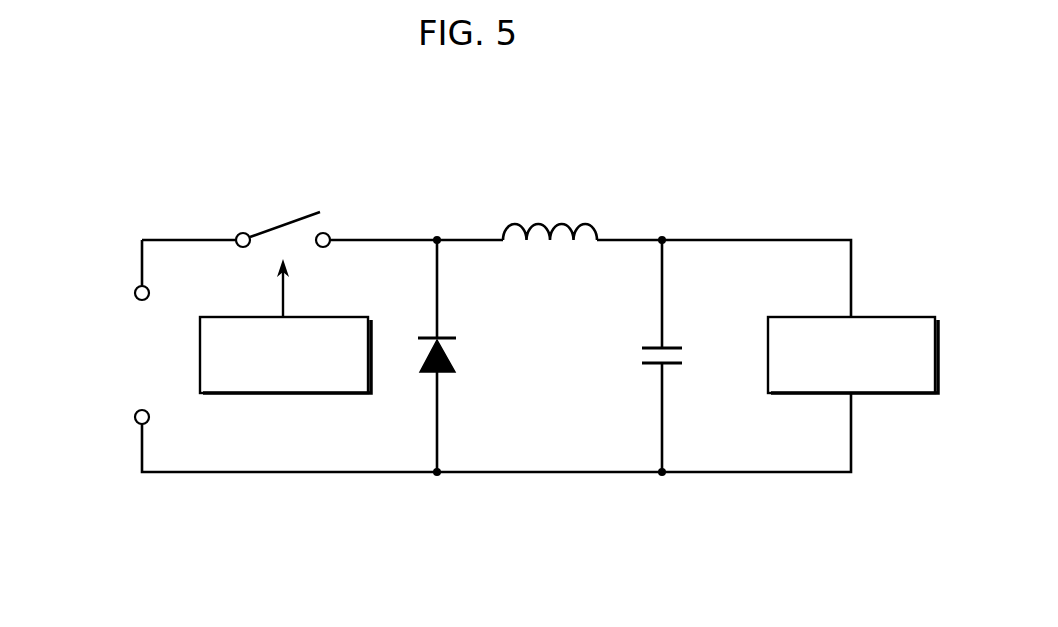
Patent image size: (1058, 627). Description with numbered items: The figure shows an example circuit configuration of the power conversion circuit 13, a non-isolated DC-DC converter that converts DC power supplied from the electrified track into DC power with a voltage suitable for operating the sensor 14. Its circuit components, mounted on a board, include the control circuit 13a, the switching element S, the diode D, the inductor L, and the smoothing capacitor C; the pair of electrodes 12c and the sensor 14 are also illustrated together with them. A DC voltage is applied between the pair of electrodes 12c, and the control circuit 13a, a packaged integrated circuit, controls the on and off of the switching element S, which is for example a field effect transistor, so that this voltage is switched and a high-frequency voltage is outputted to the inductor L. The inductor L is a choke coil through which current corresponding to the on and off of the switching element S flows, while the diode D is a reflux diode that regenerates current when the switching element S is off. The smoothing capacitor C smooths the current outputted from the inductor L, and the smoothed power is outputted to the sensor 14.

The power conversion circuit 13 is at (813, 182).
The pair of electrodes 12c is at (140, 302).
The switching element S is at (277, 225).
The control circuit 13a is at (330, 317).
The diode D is at (452, 357).
The inductor L is at (562, 220).
The smoothing capacitor C is at (680, 357).
The sensor 14 is at (905, 317).